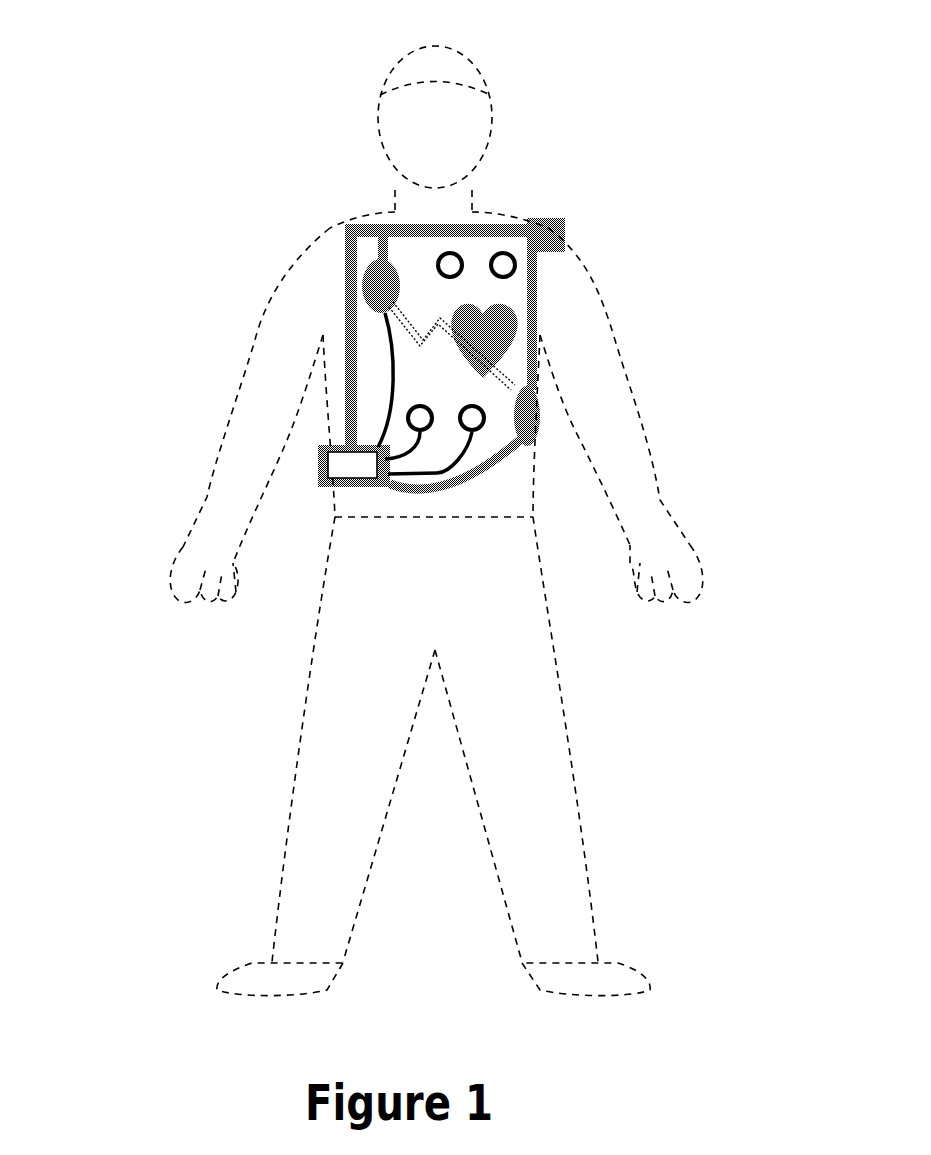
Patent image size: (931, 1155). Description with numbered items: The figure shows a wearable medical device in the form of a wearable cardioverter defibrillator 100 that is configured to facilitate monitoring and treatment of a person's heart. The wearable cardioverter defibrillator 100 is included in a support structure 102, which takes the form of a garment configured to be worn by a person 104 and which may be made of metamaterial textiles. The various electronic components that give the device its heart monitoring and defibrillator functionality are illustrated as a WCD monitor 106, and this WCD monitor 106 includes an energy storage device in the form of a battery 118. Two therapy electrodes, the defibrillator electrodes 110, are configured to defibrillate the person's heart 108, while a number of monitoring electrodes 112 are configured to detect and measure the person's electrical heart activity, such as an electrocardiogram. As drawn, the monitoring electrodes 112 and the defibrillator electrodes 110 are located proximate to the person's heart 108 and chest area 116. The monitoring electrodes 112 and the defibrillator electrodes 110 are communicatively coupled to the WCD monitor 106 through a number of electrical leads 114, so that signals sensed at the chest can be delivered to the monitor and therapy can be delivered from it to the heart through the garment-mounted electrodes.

The wearable cardioverter defibrillator 100 is at (552, 27).
The support structure 102 is at (493, 230).
The person 104 is at (378, 88).
The WCD monitor 106 is at (355, 487).
The heart 108 is at (513, 323).
The defibrillator electrodes 110 is at (365, 268).
The monitoring electrodes 112 is at (438, 252).
The electrical leads 114 is at (388, 348).
The chest area 116 is at (482, 255).
The battery 118 is at (330, 473).